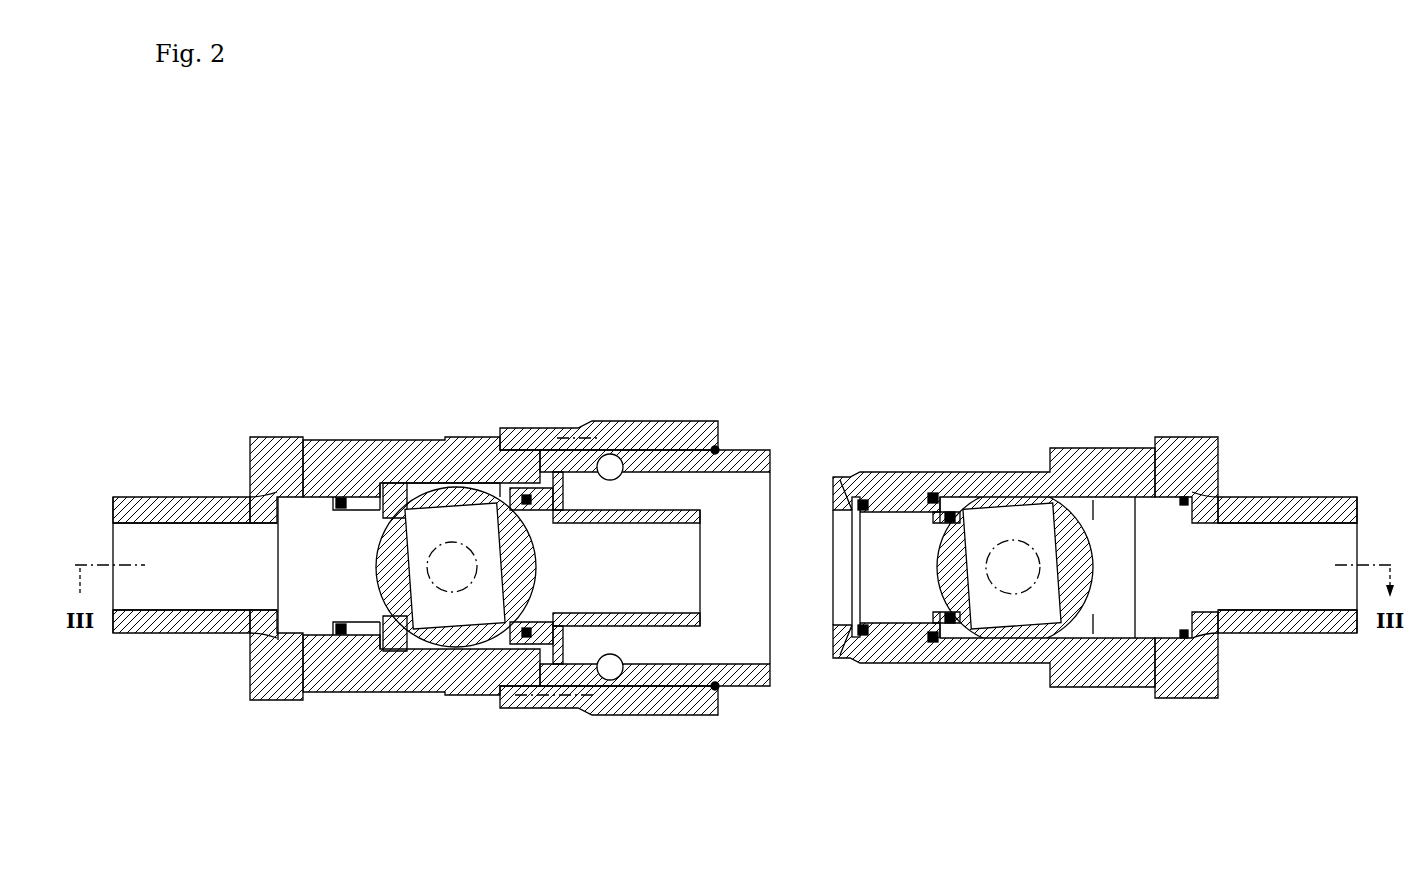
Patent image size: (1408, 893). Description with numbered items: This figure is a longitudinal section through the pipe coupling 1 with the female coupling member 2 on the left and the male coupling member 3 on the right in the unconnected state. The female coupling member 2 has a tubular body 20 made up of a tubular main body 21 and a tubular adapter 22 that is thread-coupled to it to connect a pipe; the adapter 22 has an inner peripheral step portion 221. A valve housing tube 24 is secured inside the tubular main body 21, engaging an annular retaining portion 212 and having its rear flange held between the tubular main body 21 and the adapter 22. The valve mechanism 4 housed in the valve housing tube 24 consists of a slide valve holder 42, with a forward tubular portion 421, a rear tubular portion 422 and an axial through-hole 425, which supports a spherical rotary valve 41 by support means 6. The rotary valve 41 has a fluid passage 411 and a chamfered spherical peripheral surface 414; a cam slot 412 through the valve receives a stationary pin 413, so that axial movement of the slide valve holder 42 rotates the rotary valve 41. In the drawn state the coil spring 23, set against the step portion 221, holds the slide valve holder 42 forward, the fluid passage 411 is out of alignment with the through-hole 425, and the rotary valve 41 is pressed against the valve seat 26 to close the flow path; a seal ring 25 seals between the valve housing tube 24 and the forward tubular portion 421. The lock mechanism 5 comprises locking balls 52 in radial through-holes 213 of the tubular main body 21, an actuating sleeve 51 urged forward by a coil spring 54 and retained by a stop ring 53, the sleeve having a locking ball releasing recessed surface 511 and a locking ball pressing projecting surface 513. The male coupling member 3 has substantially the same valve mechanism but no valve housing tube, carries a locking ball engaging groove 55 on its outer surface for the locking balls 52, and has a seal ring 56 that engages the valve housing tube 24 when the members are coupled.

The pipe coupling 1 is at (833, 255).
The female coupling member 2 is at (430, 408).
The male coupling member 3 is at (1165, 415).
The valve mechanism 4 is at (475, 505).
The lock mechanism 5 is at (695, 412).
The support means 6 is at (440, 598).
The tubular body 20 is at (250, 438).
The tubular main body 21 is at (418, 455).
The tubular adapter 22 is at (250, 697).
The coil spring 23 is at (300, 478).
The valve housing tube 24 is at (448, 445).
The seal ring 25 is at (527, 640).
The valve seat 26 is at (497, 657).
The rotary valve 41 is at (332, 642).
The slide valve holder 42 is at (447, 632).
The actuating sleeve 51 is at (715, 420).
The locking balls 52 is at (606, 458).
The stop ring 53 is at (718, 450).
The coil spring 54 is at (558, 440).
The locking ball engaging groove 55 is at (877, 485).
The seal ring 56 is at (862, 640).
The annular retaining portion 212 is at (548, 700).
The radial through-holes 213 is at (640, 717).
The inner peripheral step portion 221 is at (250, 648).
The fluid passage 411 is at (415, 607).
The cam slot 412 is at (360, 490).
The pin 413 is at (398, 512).
The spherical peripheral surface 414 is at (540, 645).
The forward tubular portion 421 is at (650, 615).
The rear tubular portion 422 is at (303, 698).
The through-hole 425 is at (588, 578).
The locking ball releasing recessed surface 511 is at (668, 445).
The locking ball pressing projecting surface 513 is at (612, 440).